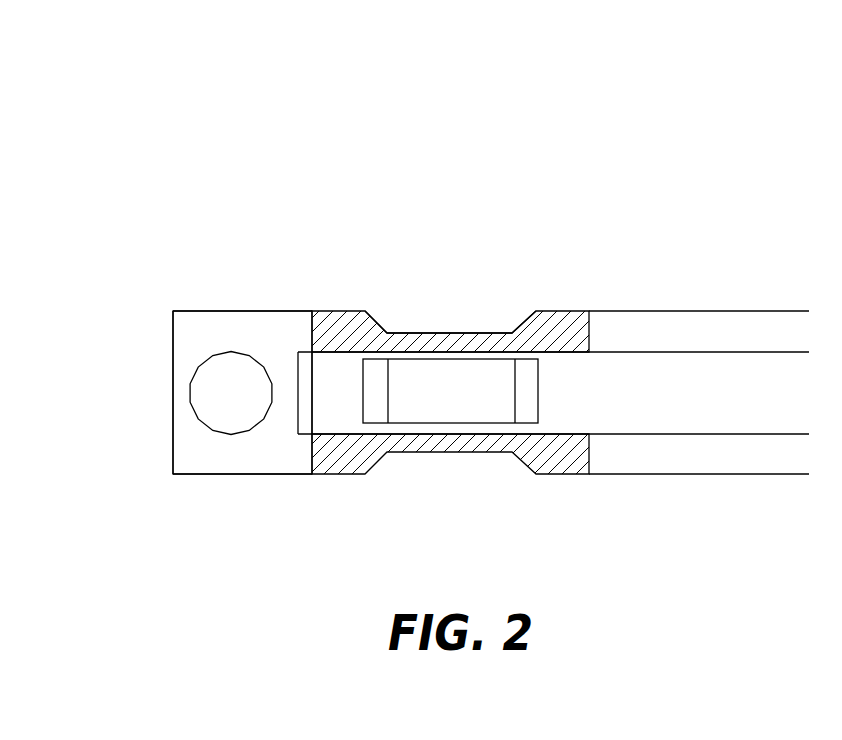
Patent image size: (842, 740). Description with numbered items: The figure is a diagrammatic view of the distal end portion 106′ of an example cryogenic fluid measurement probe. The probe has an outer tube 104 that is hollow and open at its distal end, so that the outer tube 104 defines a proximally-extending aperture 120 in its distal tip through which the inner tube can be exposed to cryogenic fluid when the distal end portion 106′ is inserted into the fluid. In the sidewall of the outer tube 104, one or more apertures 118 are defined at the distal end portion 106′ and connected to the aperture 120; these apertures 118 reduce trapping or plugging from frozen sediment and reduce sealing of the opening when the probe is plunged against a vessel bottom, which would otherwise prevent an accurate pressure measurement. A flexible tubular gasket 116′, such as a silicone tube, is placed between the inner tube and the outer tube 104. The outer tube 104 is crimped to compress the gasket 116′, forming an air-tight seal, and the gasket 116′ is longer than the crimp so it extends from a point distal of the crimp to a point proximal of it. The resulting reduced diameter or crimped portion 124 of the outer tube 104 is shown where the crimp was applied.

The distal end portion 106′ is at (399, 72).
The outer tube 104 is at (217, 317).
The tubular gasket 116′ is at (574, 327).
The apertures 118 is at (246, 444).
The aperture 120 is at (158, 400).
The crimped portion 124 is at (438, 314).